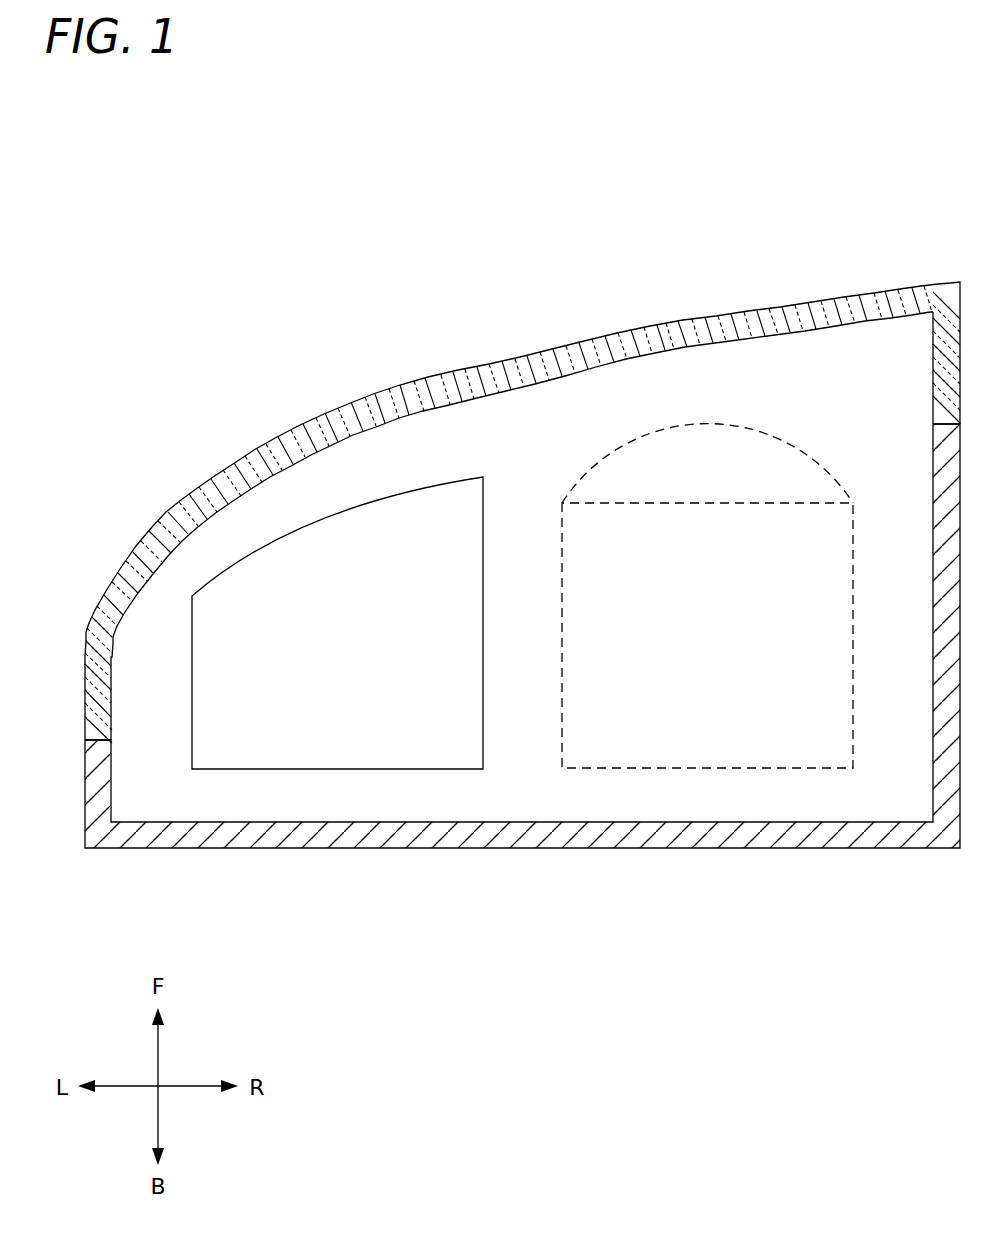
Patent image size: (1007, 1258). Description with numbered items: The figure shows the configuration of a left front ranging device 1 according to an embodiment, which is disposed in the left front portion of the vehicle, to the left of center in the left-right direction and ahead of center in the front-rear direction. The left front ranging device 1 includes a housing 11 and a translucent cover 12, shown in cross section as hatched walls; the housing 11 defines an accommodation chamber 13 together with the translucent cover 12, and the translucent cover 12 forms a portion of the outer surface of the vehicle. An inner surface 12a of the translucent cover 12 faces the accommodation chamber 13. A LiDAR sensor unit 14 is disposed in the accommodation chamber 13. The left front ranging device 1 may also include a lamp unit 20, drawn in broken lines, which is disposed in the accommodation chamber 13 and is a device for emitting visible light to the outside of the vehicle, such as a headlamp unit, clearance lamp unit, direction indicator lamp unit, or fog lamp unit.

The left front ranging device 1 is at (246, 294).
The housing 11 is at (607, 837).
The translucent cover 12 is at (727, 327).
The inner surface of outer lens 12a is at (650, 362).
The accommodation chamber 13 is at (465, 800).
The LiDAR sensor unit 14 is at (278, 770).
The lamp unit 20 is at (787, 768).